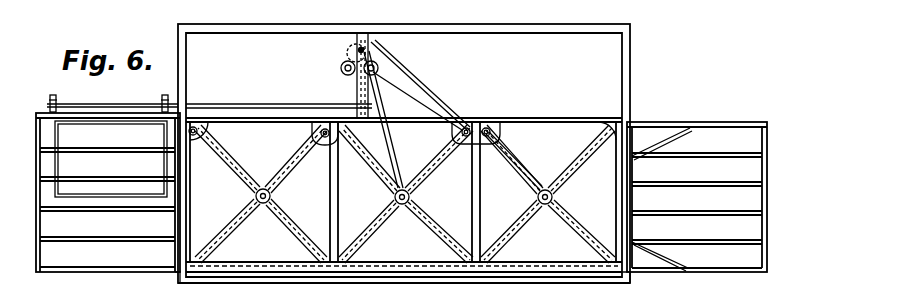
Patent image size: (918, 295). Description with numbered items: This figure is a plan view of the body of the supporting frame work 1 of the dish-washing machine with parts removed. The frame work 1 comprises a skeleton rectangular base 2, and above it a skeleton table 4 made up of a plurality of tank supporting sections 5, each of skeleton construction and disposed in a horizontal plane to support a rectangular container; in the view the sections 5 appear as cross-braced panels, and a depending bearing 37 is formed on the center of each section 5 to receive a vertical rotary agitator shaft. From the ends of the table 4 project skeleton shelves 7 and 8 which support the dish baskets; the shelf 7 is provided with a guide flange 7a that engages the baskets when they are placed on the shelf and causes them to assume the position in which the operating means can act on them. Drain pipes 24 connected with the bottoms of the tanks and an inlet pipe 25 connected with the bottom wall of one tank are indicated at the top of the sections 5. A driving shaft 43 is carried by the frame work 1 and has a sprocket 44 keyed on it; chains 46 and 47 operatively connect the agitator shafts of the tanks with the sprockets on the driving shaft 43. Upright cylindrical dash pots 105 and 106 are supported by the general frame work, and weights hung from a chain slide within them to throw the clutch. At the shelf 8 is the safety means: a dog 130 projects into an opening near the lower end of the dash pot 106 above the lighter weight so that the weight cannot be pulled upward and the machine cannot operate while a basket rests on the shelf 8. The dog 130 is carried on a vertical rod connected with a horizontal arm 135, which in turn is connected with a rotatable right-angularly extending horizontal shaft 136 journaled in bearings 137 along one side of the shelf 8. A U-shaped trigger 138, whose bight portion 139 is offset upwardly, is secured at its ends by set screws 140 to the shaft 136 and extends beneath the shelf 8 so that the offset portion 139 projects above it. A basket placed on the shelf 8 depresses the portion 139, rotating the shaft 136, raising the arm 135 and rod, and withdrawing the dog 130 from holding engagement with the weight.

The supporting frame work 1 is at (361, 292).
The skeleton rectangular base 2 is at (551, 33).
The skeleton table 4 is at (176, 280).
The tank supporting sections 5 is at (280, 153).
The skeleton shelf 7 is at (700, 124).
The guide flange 7a is at (644, 150).
The skeleton shelf 8 is at (135, 272).
The drain pipes 24 is at (326, 129).
The inlet pipe 25 is at (197, 127).
The depending bearing 37 is at (273, 198).
The driving shaft 43 is at (351, 45).
The sprocket 44 is at (357, 55).
The chain 46 is at (465, 127).
The chain 47 is at (388, 140).
The dash pot 105 is at (341, 69).
The dash pot 106 is at (380, 70).
The dog 130 is at (372, 44).
The horizontal arm 135 is at (374, 100).
The horizontal shaft 136 is at (290, 94).
The bearings 137 is at (370, 113).
The U-shaped trigger 138 is at (57, 136).
The offset bight portion 139 is at (108, 194).
The set screws 140 is at (165, 95).